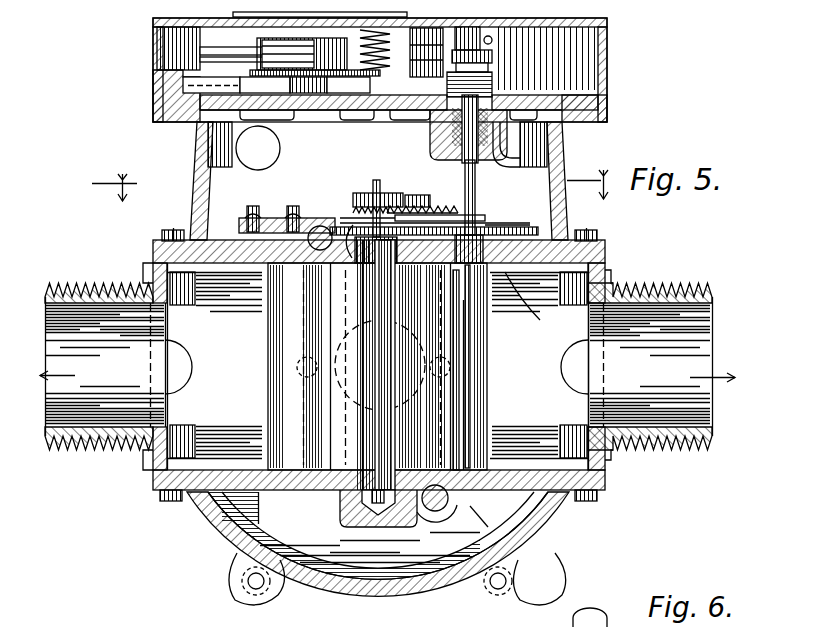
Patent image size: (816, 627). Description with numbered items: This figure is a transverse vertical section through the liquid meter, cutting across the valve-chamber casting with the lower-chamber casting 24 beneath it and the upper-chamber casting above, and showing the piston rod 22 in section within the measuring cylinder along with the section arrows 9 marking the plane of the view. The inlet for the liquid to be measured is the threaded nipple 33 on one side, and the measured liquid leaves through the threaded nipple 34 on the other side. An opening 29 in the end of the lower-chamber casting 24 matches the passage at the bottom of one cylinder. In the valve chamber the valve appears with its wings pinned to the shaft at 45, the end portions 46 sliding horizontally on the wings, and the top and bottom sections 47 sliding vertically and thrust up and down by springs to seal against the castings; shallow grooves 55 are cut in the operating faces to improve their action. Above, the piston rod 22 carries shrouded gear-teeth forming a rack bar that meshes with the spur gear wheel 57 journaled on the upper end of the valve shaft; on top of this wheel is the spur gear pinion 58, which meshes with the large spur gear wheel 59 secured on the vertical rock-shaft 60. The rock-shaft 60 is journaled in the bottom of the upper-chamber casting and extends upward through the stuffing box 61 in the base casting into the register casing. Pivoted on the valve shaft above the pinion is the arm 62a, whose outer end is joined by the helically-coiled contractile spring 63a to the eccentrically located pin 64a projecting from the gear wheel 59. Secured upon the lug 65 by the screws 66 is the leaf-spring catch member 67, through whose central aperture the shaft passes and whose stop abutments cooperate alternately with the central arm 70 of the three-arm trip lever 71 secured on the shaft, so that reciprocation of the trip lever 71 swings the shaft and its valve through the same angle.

The section line 9 is at (355, 185).
The piston rod 22 is at (322, 227).
The lower-chamber casting 24 is at (404, 598).
The opening 29 is at (488, 527).
The threaded nipple 33 is at (648, 366).
The threaded nipple 34 is at (101, 366).
The pin 45 is at (378, 365).
The end portions 46 is at (377, 366).
The top and bottom sections 47 is at (460, 272).
The shallow grooves 55 is at (462, 390).
The spur gear wheel 57 is at (352, 258).
The spur gear pinion 58 is at (386, 203).
The large spur gear wheel 59 is at (541, 233).
The vertical rock-shaft 60 is at (476, 193).
The stuffing box 61 is at (447, 128).
The arm 62a is at (350, 262).
The helically-coiled contractile spring 63a is at (446, 207).
The eccentrically located pin 64a is at (481, 222).
The lug 65 is at (268, 252).
The screws 66 is at (250, 216).
The leaf-spring catch member 67 is at (262, 268).
The central arm 70 is at (531, 224).
The three-arm trip lever 71 is at (398, 206).